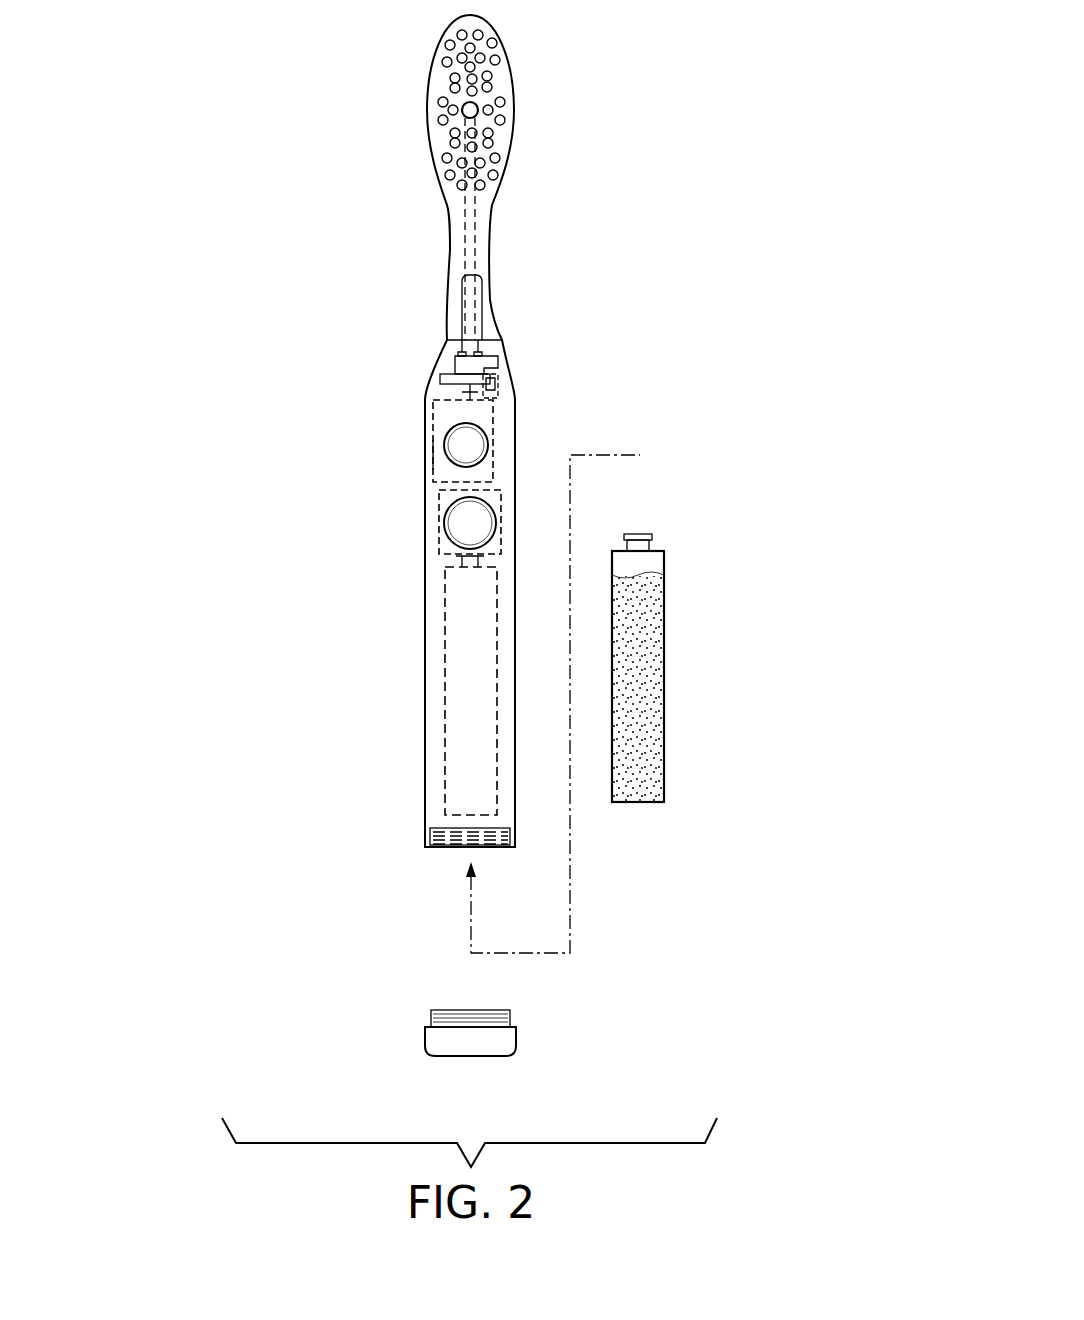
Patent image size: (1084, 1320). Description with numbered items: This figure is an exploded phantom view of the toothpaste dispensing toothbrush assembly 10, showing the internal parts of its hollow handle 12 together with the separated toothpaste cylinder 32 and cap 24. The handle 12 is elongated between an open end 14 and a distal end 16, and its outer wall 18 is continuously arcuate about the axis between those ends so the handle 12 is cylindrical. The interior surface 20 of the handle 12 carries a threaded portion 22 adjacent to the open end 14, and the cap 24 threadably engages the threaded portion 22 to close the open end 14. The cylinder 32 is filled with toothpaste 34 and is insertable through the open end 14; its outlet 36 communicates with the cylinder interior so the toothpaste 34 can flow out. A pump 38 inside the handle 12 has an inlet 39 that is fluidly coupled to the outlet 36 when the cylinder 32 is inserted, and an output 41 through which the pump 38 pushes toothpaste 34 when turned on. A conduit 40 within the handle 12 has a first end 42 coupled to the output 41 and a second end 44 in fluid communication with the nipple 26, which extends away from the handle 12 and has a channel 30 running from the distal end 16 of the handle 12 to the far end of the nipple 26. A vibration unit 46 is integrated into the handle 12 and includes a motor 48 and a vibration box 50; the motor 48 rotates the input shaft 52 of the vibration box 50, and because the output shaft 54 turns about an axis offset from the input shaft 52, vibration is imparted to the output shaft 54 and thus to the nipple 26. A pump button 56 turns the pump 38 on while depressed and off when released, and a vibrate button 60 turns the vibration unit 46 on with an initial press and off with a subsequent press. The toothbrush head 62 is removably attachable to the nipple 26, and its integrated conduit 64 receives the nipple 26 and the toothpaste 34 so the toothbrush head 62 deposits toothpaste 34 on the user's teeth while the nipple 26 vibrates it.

The toothpaste dispensing toothbrush assembly 10 is at (365, 157).
The handle 12 is at (427, 521).
The open end 14 is at (428, 847).
The distal end 16 is at (450, 340).
The outer wall 18 is at (445, 652).
The interior surface 20 is at (502, 785).
The threaded portion 22 is at (445, 852).
The cap 24 is at (425, 1035).
The nipple 26 is at (482, 290).
The channel 30 is at (454, 283).
The cylinder 32 is at (694, 622).
The toothpaste 34 is at (636, 574).
The outlet 36 is at (644, 534).
The pump 38 is at (500, 490).
The inlet 39 is at (472, 560).
The conduit 40 is at (440, 385).
The output 41 is at (497, 486).
The first end 42 is at (471, 490).
The second end 44 is at (477, 320).
The vibration unit 46 is at (422, 421).
The motor 48 is at (432, 460).
The vibration box 50 is at (455, 370).
The input shaft 52 is at (444, 397).
The output shaft 54 is at (502, 340).
The pump button 56 is at (447, 537).
The vibrate button 60 is at (483, 392).
The toothbrush head 62 is at (433, 88).
The conduit 64 is at (477, 208).